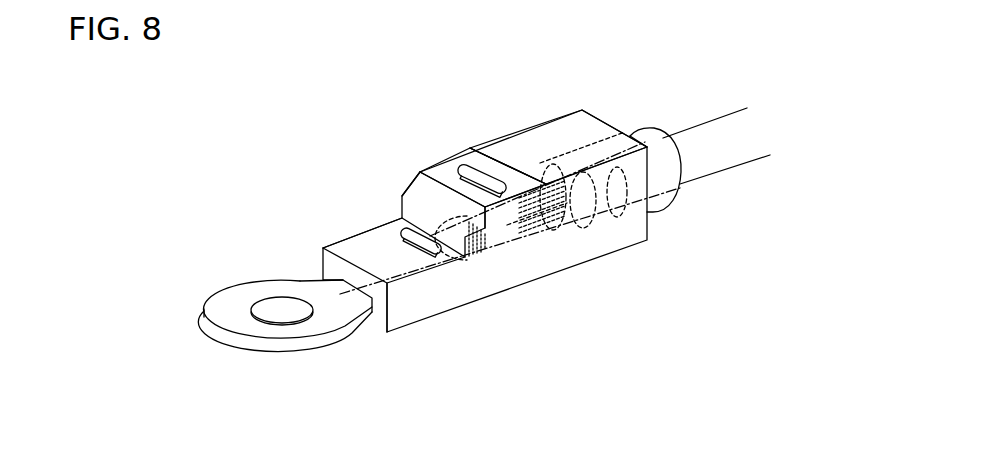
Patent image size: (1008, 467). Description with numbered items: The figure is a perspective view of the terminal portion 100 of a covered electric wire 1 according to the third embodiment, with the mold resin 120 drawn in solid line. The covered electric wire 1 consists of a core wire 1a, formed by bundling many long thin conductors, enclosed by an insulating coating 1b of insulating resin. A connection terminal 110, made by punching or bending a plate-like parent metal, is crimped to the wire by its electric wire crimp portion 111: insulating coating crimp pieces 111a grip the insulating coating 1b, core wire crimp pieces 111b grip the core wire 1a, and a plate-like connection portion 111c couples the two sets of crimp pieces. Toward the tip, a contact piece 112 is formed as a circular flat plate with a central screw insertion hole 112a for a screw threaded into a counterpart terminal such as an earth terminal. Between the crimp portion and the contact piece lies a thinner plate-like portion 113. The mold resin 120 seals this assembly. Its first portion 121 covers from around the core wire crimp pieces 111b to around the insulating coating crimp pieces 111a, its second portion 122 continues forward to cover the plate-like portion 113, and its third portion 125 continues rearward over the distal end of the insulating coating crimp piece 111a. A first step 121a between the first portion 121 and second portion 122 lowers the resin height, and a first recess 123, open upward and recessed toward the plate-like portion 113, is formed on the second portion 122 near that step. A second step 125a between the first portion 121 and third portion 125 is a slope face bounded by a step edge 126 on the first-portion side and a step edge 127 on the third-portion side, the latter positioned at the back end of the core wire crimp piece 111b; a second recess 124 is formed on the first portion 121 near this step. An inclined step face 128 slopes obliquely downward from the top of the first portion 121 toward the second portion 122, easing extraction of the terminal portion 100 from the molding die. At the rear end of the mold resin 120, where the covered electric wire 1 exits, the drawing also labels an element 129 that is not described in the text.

The covered electric wire 1 is at (706, 112).
The core wire 1a is at (555, 190).
The insulating coating 1b is at (732, 160).
The terminal portion 100 is at (308, 127).
The connection terminal 110 is at (585, 418).
The electric wire crimp portion 111 is at (643, 382).
The insulating coating crimp pieces 111a is at (622, 213).
The core wire crimp pieces 111b is at (512, 240).
The plate-like connection portion 111c is at (568, 233).
The contact piece 112 is at (320, 350).
The screw insertion hole 112a is at (273, 300).
The plate-like portion 113 is at (437, 262).
The mold resin 120 is at (600, 107).
The first portion 121 is at (445, 178).
The first step 121a is at (395, 217).
The second portion 122 is at (358, 252).
The first recess 123 is at (425, 228).
The second recess 124 is at (485, 185).
The third portion 125 is at (568, 128).
The second step 125a is at (470, 148).
The step edge 126 is at (520, 195).
The step edge 127 is at (535, 200).
The step face 128 is at (433, 200).
The seal member 129 is at (665, 212).